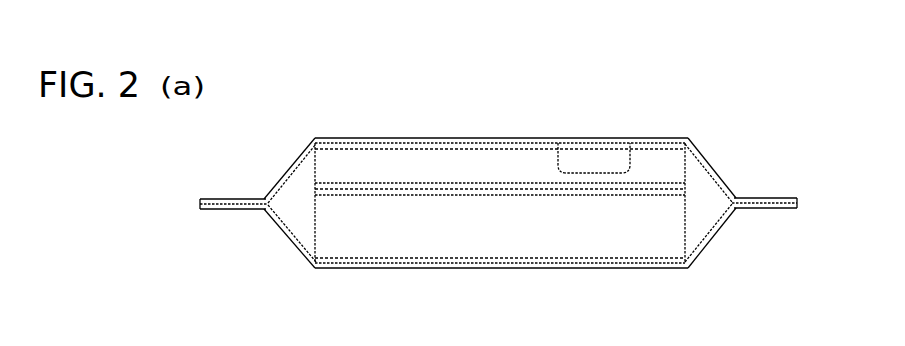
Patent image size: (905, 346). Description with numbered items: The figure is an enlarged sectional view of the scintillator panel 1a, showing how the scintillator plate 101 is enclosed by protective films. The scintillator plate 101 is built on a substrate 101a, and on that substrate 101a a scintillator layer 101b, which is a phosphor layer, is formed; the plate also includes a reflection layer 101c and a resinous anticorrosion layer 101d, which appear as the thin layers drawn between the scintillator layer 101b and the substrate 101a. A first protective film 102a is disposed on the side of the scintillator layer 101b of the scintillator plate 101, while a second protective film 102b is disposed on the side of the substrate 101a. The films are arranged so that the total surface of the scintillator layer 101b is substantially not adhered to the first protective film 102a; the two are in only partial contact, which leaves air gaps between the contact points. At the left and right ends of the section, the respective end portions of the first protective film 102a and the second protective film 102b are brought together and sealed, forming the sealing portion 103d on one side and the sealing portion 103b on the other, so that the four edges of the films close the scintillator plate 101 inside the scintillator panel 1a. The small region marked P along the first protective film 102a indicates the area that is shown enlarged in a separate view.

The scintillator panel 1a is at (649, 100).
The scintillator plate 101 is at (313, 237).
The substrate 101a is at (358, 243).
The scintillator layer 101b is at (341, 160).
The reflection layer 101c is at (418, 195).
The resinous anticorrosion layer 101d is at (418, 183).
The first protective film 102a is at (462, 138).
The second protective film 102b is at (462, 268).
The sealing portion 103b is at (757, 198).
The sealing portion 103d is at (222, 199).
The portion designated by P is at (582, 143).